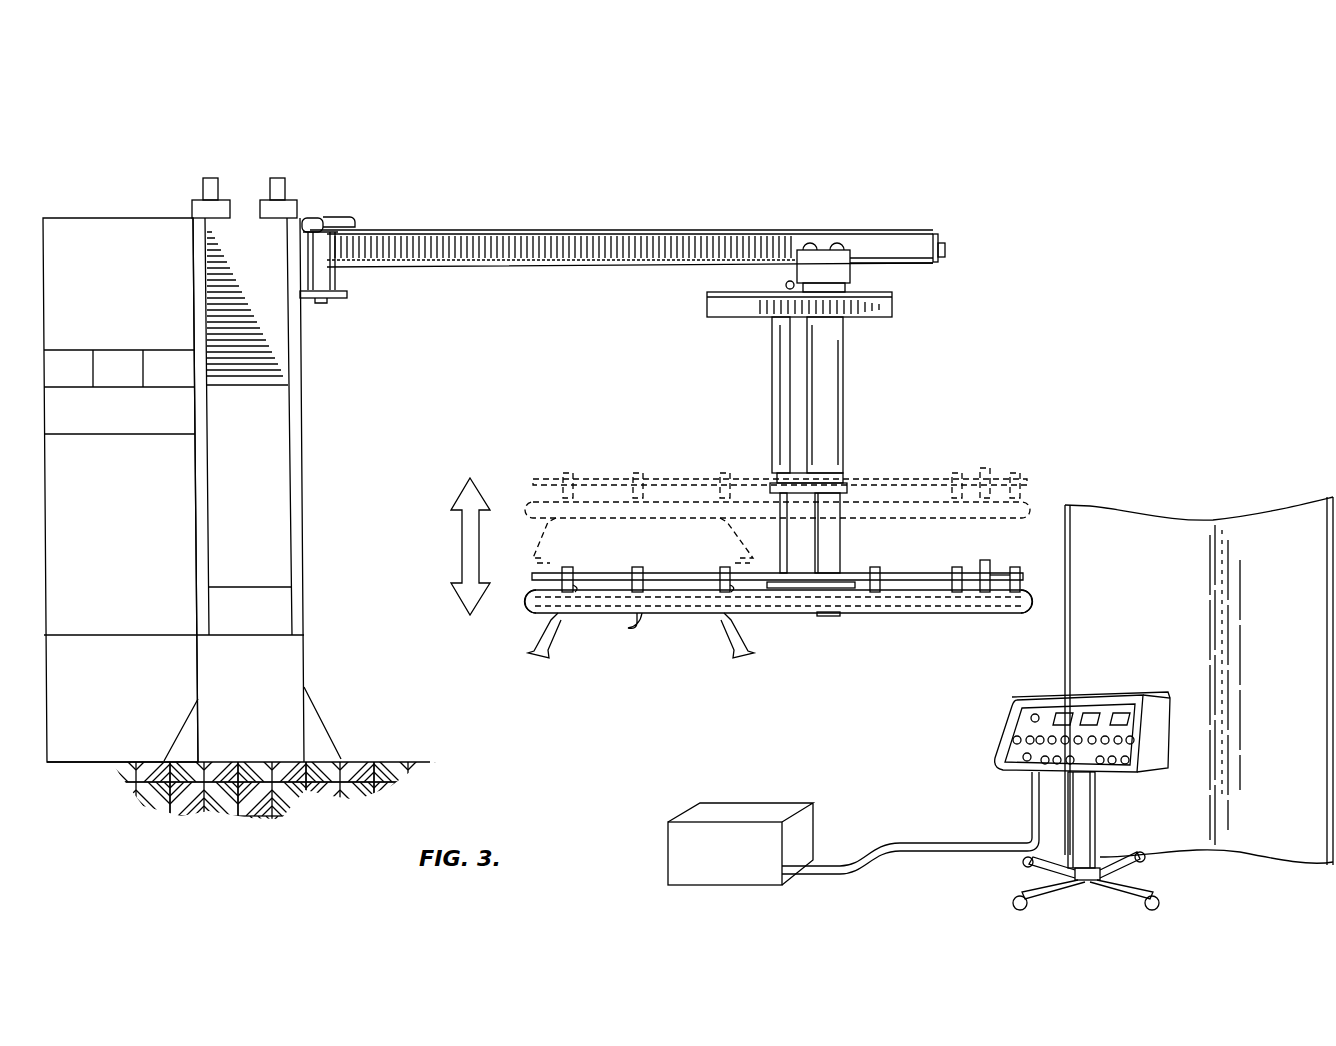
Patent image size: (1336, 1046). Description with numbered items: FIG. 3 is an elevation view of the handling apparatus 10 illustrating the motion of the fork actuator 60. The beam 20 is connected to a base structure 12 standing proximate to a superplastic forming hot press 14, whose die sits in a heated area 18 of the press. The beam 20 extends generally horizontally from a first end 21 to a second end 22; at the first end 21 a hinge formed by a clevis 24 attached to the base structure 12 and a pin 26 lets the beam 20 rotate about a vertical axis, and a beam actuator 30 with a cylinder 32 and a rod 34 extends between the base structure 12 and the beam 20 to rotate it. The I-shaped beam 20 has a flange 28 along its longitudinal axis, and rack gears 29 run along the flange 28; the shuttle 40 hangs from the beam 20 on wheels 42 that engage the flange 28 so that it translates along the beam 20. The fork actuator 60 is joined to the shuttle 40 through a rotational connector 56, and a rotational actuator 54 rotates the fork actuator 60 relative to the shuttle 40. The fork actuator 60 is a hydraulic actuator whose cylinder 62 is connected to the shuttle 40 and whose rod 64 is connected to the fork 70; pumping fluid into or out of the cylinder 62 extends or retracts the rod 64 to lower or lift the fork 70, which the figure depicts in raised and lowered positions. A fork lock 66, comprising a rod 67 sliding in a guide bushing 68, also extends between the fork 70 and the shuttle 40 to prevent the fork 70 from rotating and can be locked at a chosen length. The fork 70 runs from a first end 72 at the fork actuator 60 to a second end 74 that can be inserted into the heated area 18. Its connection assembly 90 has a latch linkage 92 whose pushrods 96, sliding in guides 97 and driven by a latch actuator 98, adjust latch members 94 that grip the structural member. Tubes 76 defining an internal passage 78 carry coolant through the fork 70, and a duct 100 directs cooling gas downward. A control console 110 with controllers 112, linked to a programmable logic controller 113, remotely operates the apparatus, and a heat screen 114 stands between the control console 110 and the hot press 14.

The handling apparatus 10 is at (1003, 150).
The base structure 12 is at (305, 689).
The superplastic forming hot press 14 is at (105, 237).
The heated area 18 is at (250, 503).
The beam 20 is at (546, 230).
The first end 21 is at (337, 253).
The second end 22 is at (933, 230).
The clevis 24 is at (307, 265).
The pin 26 is at (322, 302).
The flange 28 is at (910, 265).
The rack gears 29 is at (637, 262).
The beam actuator 30 is at (320, 218).
The cylinder 32 is at (305, 215).
The rod 34 is at (338, 218).
The shuttle 40 is at (806, 273).
The wheels 42 is at (833, 245).
The rotational actuator 54 is at (787, 282).
The rotational connector 56 is at (843, 317).
The fork actuator 60 is at (843, 432).
The cylinder 62 is at (843, 387).
The rod 64 is at (840, 540).
The fork lock 66 is at (772, 408).
The rod 67 is at (780, 540).
The guide bushing 68 is at (773, 362).
The fork 70 is at (910, 607).
The first end 72 is at (1035, 600).
The second end 74 is at (527, 603).
The tubes 76 is at (814, 613).
The internal passage 78 is at (939, 594).
The connection assembly 90 is at (690, 573).
The latch linkage 92 is at (637, 568).
The latch members 94 is at (550, 657).
The pushrods 96 is at (833, 573).
The guides 97 is at (723, 588).
The latch actuator 98 is at (986, 562).
The duct 100 is at (777, 613).
The control console 110 is at (1010, 762).
The controllers 112 is at (1045, 762).
The programmable logic controller 113 is at (668, 857).
The heat screen 114 is at (1250, 515).